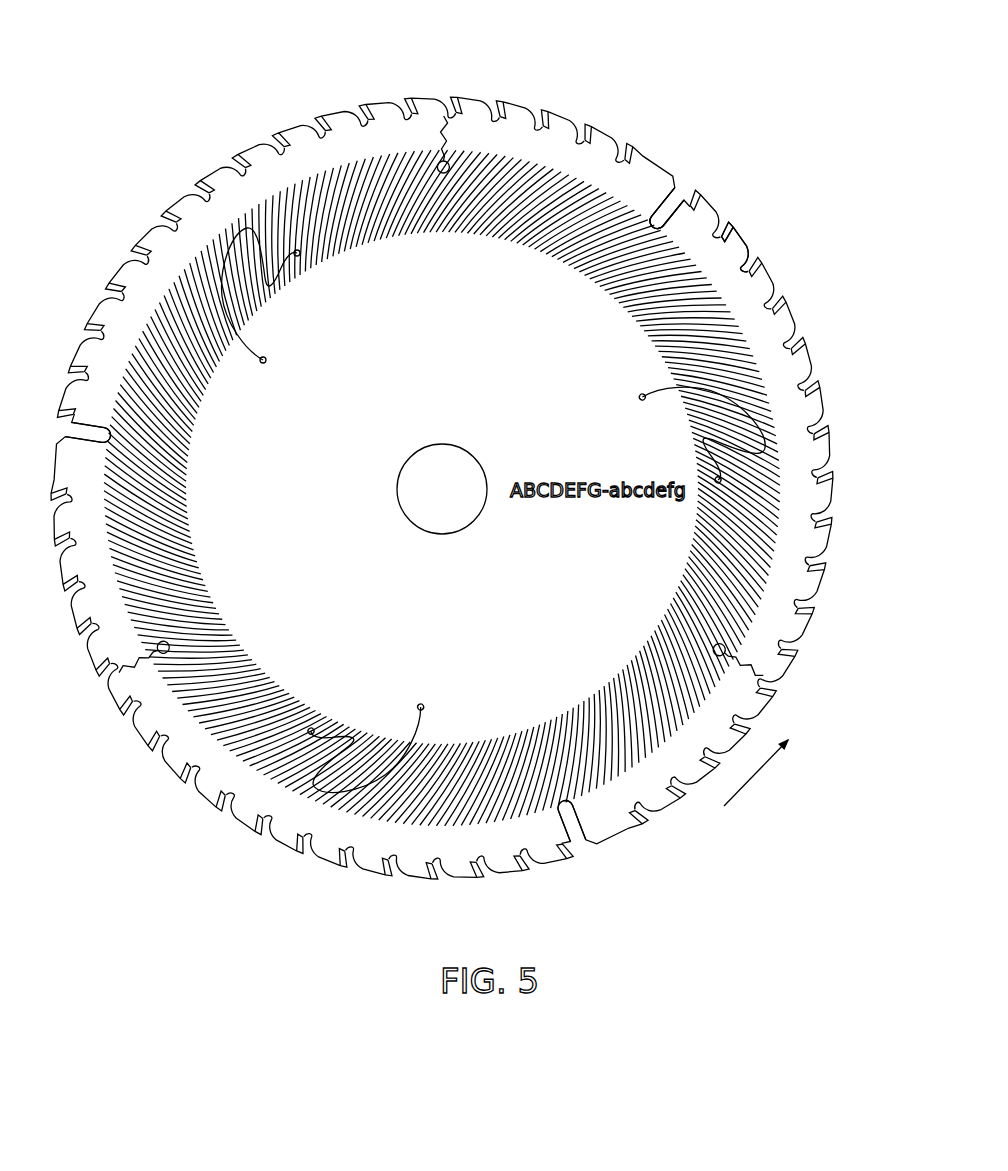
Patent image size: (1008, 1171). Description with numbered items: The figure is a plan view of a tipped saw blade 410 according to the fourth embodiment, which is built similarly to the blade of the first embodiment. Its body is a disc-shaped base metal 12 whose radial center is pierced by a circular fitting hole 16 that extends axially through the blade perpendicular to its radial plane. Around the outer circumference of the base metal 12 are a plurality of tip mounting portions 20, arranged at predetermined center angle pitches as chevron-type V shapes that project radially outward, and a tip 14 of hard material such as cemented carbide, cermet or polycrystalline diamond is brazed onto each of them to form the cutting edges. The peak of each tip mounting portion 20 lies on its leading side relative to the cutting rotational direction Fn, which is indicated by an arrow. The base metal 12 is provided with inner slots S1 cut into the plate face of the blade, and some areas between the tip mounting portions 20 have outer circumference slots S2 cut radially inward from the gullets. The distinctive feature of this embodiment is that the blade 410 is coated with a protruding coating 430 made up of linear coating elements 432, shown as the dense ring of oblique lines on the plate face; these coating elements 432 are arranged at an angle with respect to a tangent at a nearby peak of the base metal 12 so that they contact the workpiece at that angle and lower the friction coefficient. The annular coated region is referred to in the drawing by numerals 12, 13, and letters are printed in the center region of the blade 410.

The base metal 12 is at (607, 350).
The outer peripheral portion 13 is at (607, 350).
The tip 14 is at (730, 228).
The fitting hole 16 is at (429, 447).
The tip mounting portion 20 is at (792, 321).
The tipped saw blade 410 is at (666, 138).
The protruding coating 430 is at (389, 539).
The linear coating element 432 is at (597, 784).
The inner slot S1 is at (264, 364).
The outer circumference slot S2 is at (440, 112).
The cutting rotational direction Fn is at (756, 775).